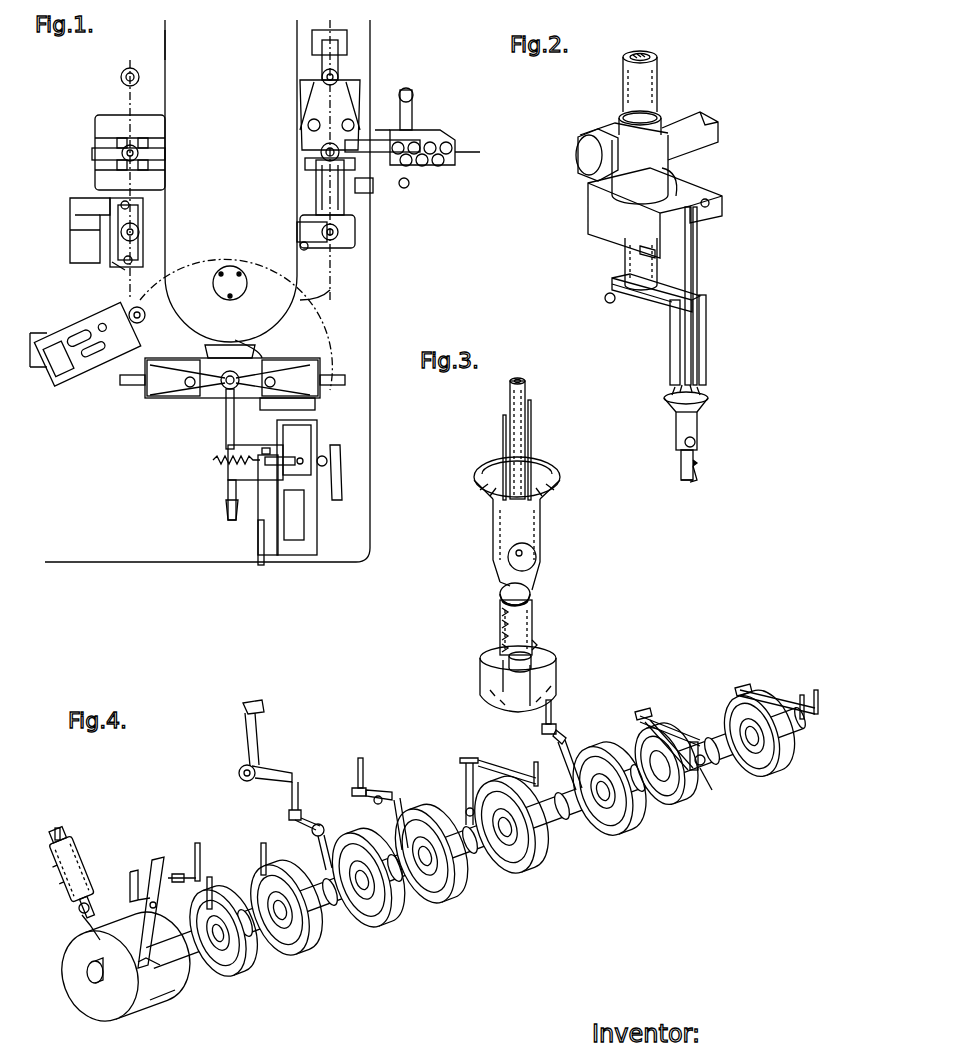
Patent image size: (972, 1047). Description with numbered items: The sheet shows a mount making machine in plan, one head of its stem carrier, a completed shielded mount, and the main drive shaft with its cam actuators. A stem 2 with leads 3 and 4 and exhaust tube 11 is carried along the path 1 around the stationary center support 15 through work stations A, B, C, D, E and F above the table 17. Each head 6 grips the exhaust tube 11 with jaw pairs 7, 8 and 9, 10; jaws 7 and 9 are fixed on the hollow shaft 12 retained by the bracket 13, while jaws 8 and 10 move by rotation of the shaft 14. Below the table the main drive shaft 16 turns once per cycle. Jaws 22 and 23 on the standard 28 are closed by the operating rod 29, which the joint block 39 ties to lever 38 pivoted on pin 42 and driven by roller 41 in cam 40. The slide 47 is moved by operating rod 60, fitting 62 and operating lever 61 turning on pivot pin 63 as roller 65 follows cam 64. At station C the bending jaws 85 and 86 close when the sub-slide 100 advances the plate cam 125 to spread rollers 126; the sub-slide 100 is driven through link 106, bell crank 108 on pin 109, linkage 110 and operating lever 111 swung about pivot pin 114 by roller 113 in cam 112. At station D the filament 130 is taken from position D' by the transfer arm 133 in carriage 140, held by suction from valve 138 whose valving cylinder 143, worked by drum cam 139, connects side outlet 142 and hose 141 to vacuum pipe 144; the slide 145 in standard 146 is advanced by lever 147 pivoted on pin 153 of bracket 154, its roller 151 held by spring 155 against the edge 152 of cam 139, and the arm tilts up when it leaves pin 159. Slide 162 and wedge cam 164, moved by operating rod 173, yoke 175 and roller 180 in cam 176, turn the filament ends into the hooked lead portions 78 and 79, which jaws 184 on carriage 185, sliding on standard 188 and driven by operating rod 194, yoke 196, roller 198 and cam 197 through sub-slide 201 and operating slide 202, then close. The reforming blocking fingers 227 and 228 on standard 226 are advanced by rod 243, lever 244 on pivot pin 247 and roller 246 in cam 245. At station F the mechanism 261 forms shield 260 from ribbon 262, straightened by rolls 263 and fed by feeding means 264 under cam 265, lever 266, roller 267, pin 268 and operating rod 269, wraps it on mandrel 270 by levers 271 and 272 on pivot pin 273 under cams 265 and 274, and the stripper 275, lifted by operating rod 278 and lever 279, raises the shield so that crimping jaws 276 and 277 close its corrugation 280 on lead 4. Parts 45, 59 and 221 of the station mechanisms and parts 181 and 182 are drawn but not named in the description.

In FIG. 1, the path of movement 1 is at (135, 105).
In FIG. 1, the stem 2 is at (120, 75).
In FIG. 2, the stem 2 is at (700, 420).
In FIG. 3, the stem 2 is at (542, 525).
In FIG. 2, the lead 3 is at (697, 458).
In FIG. 3, the lead 3 is at (536, 575).
In FIG. 2, the lead 4 is at (678, 458).
In FIG. 3, the lead 4 is at (502, 590).
In FIG. 2, the head 6 is at (600, 235).
In FIG. 2, the jaw 7 is at (718, 226).
In FIG. 2, the jaw 8 is at (675, 252).
In FIG. 2, the jaw 9 is at (704, 350).
In FIG. 2, the jaw 10 is at (670, 372).
In FIG. 2, the exhaust tube 11 is at (700, 390).
In FIG. 2, the hollow shaft 12 is at (625, 95).
In FIG. 2, the bracket 13 is at (705, 148).
In FIG. 2, the shaft 14 is at (650, 58).
In FIG. 1, the stationary center support 15 is at (165, 40).
In FIG. 4, the main drive shaft 16 is at (185, 968).
In FIG. 1, the table 17 is at (372, 394).
In FIG. 1, the jaw 22 is at (152, 150).
In FIG. 1, the jaw 23 is at (115, 163).
In FIG. 1, the standard 28 is at (95, 125).
In FIG. 4, the operating rod 29 is at (552, 708).
In FIG. 4, the lever 38 is at (565, 735).
In FIG. 4, the joint block 39 is at (542, 726).
In FIG. 4, the cam 40 is at (625, 815).
In FIG. 4, the roller 41 is at (568, 780).
In FIG. 4, the pin 42 is at (545, 757).
In FIG. 1, the bracket 45 is at (145, 250).
In FIG. 1, the slide 47 is at (120, 265).
In FIG. 1, the block 59 is at (70, 244).
In FIG. 4, the operating rod 60 is at (364, 770).
In FIG. 4, the operating lever 61 is at (392, 790).
In FIG. 4, the fitting 62 is at (353, 790).
In FIG. 4, the pivot pin 63 is at (374, 802).
In FIG. 4, the cam 64 is at (452, 890).
In FIG. 4, the roller 65 is at (402, 800).
In FIG. 2, the end portion of lead 78 is at (700, 470).
In FIG. 2, the end portion of lead 79 is at (685, 485).
In FIG. 1, the bending jaw 85 is at (142, 325).
In FIG. 1, the bending jaw 86 is at (140, 305).
In FIG. 1, the sub-slide 100 is at (65, 365).
In FIG. 4, the link 106 is at (262, 710).
In FIG. 4, the bell crank 108 is at (243, 748).
In FIG. 4, the pin 109 is at (239, 775).
In FIG. 4, the linkage 110 is at (291, 797).
In FIG. 4, the operating lever 111 is at (303, 812).
In FIG. 4, the cam 112 is at (388, 918).
In FIG. 4, the roller 113 is at (360, 835).
In FIG. 4, the pivot pin 114 is at (312, 830).
In FIG. 1, the plate cam 125 is at (100, 365).
In FIG. 1, the rollers 126 is at (85, 330).
In FIG. 2, the filament 130 is at (695, 478).
In FIG. 3, the filament 130 is at (533, 618).
In FIG. 1, the transfer arm 133 is at (232, 418).
In FIG. 4, the valve 138 is at (55, 836).
In FIG. 4, the drum cam 139 is at (100, 1008).
In FIG. 1, the carriage 140 is at (250, 455).
In FIG. 1, the rubber hose 141 is at (228, 500).
In FIG. 4, the side outlet 142 is at (58, 875).
In FIG. 4, the valving cylinder 143 is at (82, 918).
In FIG. 4, the pipe 144 is at (70, 835).
In FIG. 1, the slide 145 is at (298, 430).
In FIG. 1, the standard 146 is at (312, 530).
In FIG. 4, the lever 147 is at (160, 860).
In FIG. 4, the roller 151 is at (150, 964).
In FIG. 4, the edge 152 is at (152, 992).
In FIG. 4, the pivot pin 153 is at (168, 920).
In FIG. 4, the bracket 154 is at (130, 882).
In FIG. 4, the helical spring 155 is at (197, 845).
In FIG. 1, the pin 159 is at (258, 548).
In FIG. 1, the slide 162 is at (270, 470).
In FIG. 1, the wedge cam 164 is at (334, 476).
In FIG. 4, the operating rod 173 is at (212, 878).
In FIG. 4, the yoke 175 is at (245, 950).
In FIG. 4, the cam 176 is at (242, 968).
In FIG. 4, the roller 180 is at (240, 875).
In FIG. 4, the bore 181 is at (65, 978).
In FIG. 4, the pivot 182 is at (78, 908).
In FIG. 1, the jaws 184 is at (200, 392).
In FIG. 1, the carriage 185 is at (152, 360).
In FIG. 1, the standard 188 is at (262, 348).
In FIG. 4, the operating rod 194 is at (264, 845).
In FIG. 4, the yoke 196 is at (305, 918).
In FIG. 4, the cam 197 is at (300, 938).
In FIG. 4, the roller 198 is at (292, 864).
In FIG. 1, the sub-slide 201 is at (322, 372).
In FIG. 1, the operating slide 202 is at (150, 392).
In FIG. 1, the plate 221 is at (315, 400).
In FIG. 1, the stationary standard 226 is at (350, 244).
In FIG. 1, the blocking finger 227 is at (355, 220).
In FIG. 1, the blocking finger 228 is at (326, 248).
In FIG. 4, the rod 243 is at (512, 768).
In FIG. 4, the lever 244 is at (462, 761).
In FIG. 4, the cam 245 is at (532, 860).
In FIG. 4, the roller 246 is at (466, 812).
In FIG. 4, the stationary pivot pin 247 is at (457, 758).
In FIG. 3, the cylindrical shield 260 is at (540, 640).
In FIG. 1, the mechanism 261 is at (380, 95).
In FIG. 1, the metal ribbon 262 is at (470, 152).
In FIG. 1, the rolls 263 is at (432, 135).
In FIG. 1, the feeding means 264 is at (396, 186).
In FIG. 4, the cam 265 is at (677, 792).
In FIG. 4, the lever 266 is at (696, 772).
In FIG. 4, the roller 267 is at (682, 732).
In FIG. 4, the stationary pin 268 is at (706, 762).
In FIG. 4, the operating rod 269 is at (714, 786).
In FIG. 3, the mandrel 270 is at (556, 670).
In FIG. 4, the lever 271 is at (668, 708).
In FIG. 4, the lever 272 is at (757, 688).
In FIG. 4, the pivot pin 273 is at (632, 720).
In FIG. 4, the cam 274 is at (778, 765).
In FIG. 3, the stripper 275 is at (486, 688).
In FIG. 1, the crimping jaw 276 is at (310, 150).
In FIG. 1, the crimping jaw 277 is at (310, 138).
In FIG. 4, the operating rod 278 is at (803, 698).
In FIG. 4, the lever 279 is at (815, 690).
In FIG. 3, the corrugation 280 is at (502, 610).
In FIG. 1, the work station A is at (113, 153).
In FIG. 1, the work station B is at (115, 255).
In FIG. 1, the work station C is at (140, 360).
In FIG. 1, the work station D is at (196, 424).
In FIG. 1, the position D' is at (225, 478).
In FIG. 1, the work station E is at (345, 238).
In FIG. 1, the work station F is at (345, 158).